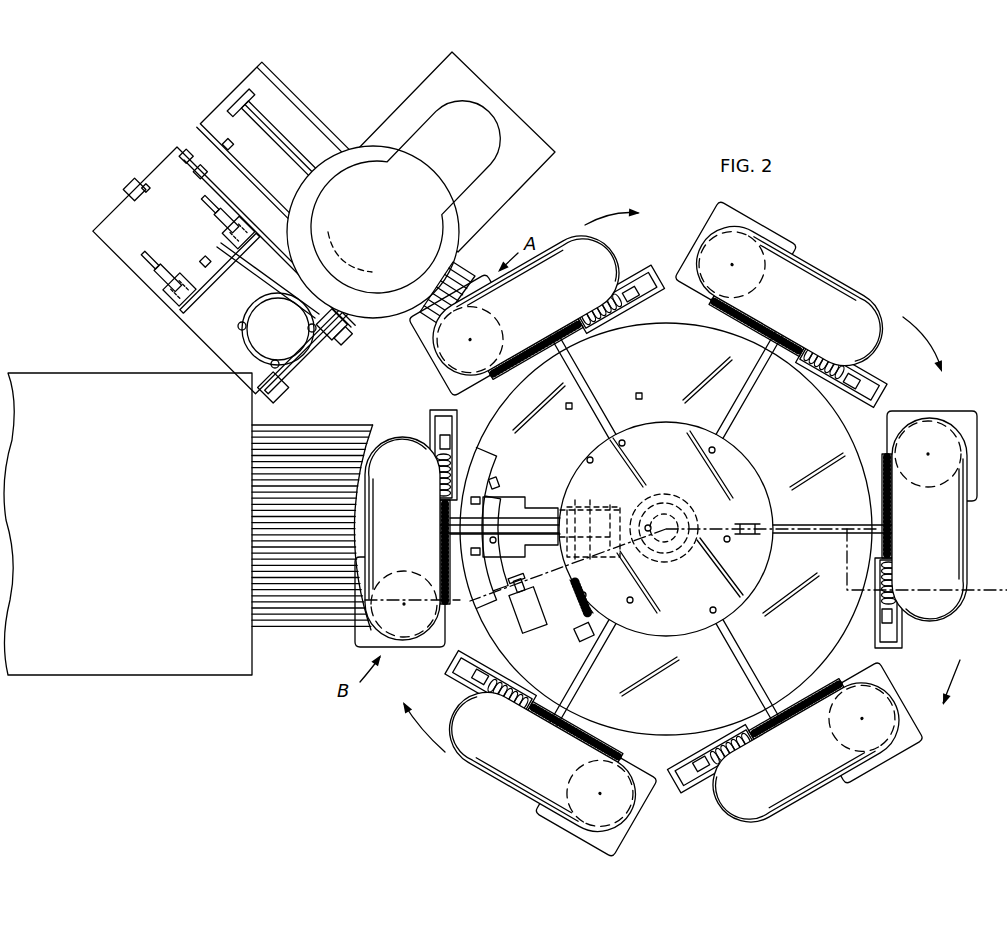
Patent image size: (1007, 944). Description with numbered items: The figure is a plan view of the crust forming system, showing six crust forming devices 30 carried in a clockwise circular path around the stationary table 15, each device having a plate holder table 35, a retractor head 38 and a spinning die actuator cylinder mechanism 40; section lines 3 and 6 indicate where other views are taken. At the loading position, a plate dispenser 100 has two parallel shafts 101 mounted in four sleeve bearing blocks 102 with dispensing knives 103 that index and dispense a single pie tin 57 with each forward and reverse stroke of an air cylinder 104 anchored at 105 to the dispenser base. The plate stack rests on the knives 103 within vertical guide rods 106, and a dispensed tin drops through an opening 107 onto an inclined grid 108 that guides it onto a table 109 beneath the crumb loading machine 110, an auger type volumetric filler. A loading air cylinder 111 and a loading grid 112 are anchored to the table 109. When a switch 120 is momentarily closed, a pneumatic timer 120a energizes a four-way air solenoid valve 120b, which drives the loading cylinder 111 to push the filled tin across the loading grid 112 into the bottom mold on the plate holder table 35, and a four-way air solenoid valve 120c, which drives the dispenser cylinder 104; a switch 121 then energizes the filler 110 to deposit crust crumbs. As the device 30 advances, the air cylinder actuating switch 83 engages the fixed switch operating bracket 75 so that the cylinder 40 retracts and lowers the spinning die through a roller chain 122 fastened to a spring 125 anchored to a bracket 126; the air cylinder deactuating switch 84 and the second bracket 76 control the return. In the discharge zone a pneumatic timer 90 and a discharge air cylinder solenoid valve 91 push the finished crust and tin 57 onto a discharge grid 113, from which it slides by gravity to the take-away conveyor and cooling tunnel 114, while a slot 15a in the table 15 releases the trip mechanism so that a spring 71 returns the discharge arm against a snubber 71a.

The section line 3- 3 is at (335, 600).
The section line 6- 6 is at (672, 304).
The stationary table 15 is at (797, 471).
The slot 15a is at (497, 486).
The crust forming device 30 is at (852, 286).
The plate holder table 35 is at (745, 232).
The retractor head 38 is at (405, 527).
The spinning die actuator cylinder mechanism 40 is at (601, 348).
The pie tin 57 is at (285, 333).
The spring 71 is at (603, 605).
The snubber 71a is at (527, 634).
The fixed switch operating bracket 75 is at (730, 540).
The fixed switch operating bracket 76 is at (647, 472).
The air cylinder actuating switch 83 is at (714, 452).
The air cylinder deactuating switch 84 is at (690, 515).
The pneumatic timer 90 is at (552, 500).
The discharge air cylinder solenoid valve 91 is at (539, 516).
The plate dispenser 100 is at (143, 279).
The parallel shafts 101 is at (205, 203).
The sleeve bearing blocks 102 is at (233, 216).
The dispensing knives 103 is at (338, 292).
The air cylinder 104 is at (153, 178).
The anchor 105 is at (127, 186).
The vertical guide rods 106 is at (277, 296).
The opening 107 is at (306, 392).
The inclined grid 108 is at (342, 245).
The table 109 is at (309, 123).
The crumb loading machine 110 is at (443, 166).
The loading air cylinder 111 is at (262, 100).
The loading grid 112 is at (461, 276).
The discharge grid 113 is at (298, 628).
The take-away conveyor and cooling tunnel 114 is at (130, 553).
The switch 120 is at (568, 410).
The pneumatic timer 120a is at (182, 151).
The 4-way air solenoid valve 120b is at (208, 173).
The 4-way air solenoid valve 120c is at (228, 139).
The switch 121 is at (647, 395).
The roller chain 122 is at (537, 337).
The spring 125 is at (624, 290).
The bracket 126 is at (660, 264).